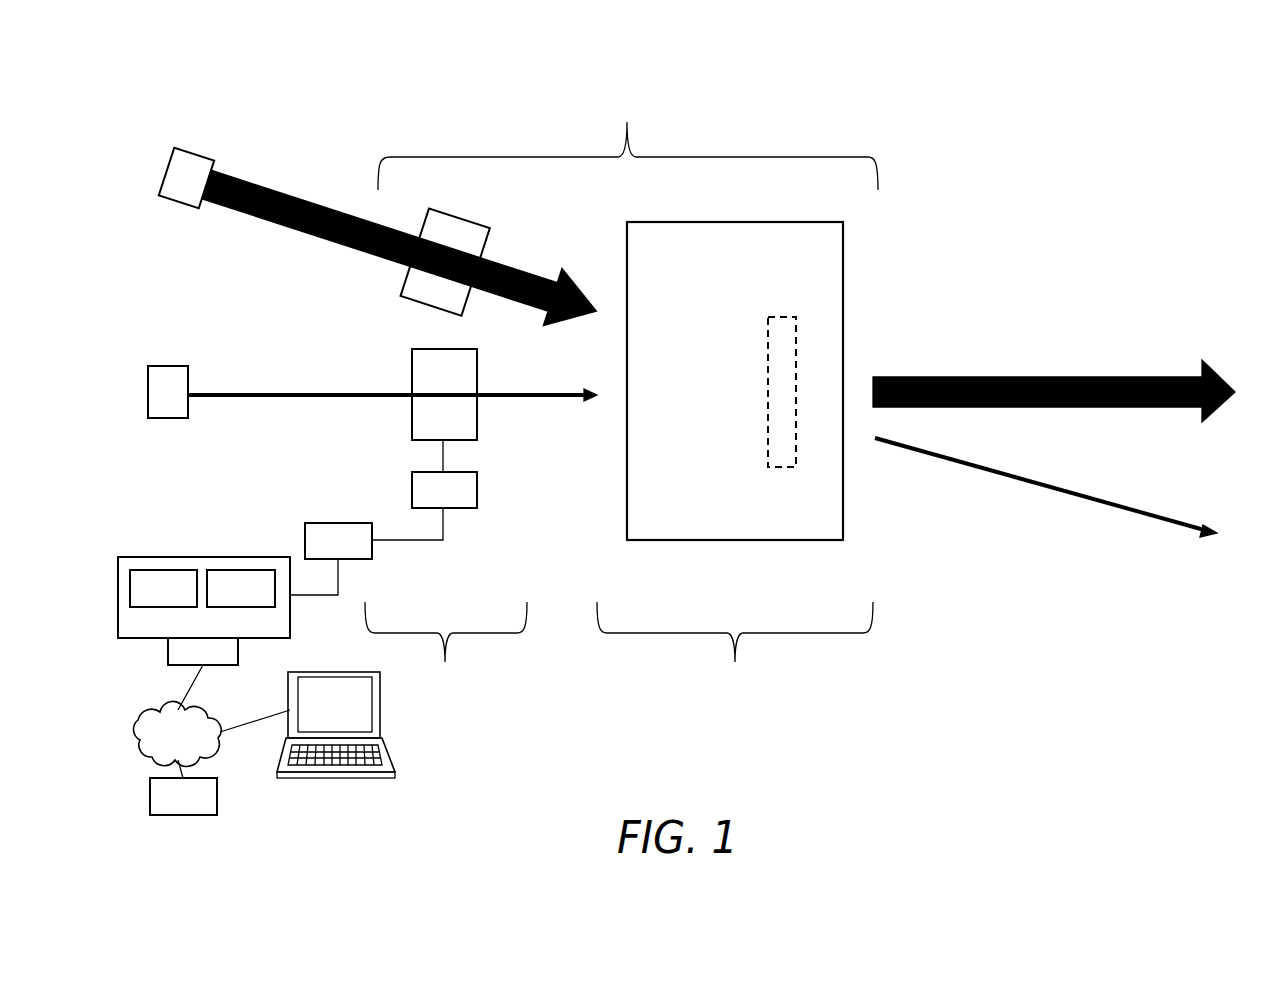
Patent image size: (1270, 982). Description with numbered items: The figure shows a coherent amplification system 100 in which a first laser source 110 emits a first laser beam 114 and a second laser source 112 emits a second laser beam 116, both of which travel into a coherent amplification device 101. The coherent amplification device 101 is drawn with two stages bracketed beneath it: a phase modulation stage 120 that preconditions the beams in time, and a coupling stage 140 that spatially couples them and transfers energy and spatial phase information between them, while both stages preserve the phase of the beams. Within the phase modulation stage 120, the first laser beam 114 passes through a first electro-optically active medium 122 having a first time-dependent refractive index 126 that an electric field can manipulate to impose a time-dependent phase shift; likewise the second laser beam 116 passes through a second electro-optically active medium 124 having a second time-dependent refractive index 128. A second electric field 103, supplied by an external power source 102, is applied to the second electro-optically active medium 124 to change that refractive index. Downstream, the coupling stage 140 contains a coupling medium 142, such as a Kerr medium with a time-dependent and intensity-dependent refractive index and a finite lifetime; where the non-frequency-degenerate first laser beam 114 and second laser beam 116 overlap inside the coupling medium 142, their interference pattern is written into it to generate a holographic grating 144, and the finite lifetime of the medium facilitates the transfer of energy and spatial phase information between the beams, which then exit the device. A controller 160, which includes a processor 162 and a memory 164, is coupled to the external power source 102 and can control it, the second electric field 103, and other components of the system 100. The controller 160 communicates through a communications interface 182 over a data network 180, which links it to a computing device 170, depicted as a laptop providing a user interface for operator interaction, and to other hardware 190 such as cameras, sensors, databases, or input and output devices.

The system 100 is at (1117, 125).
The coherent amplification device 101 is at (628, 144).
The external power source 102 is at (324, 551).
The second electric field 103 is at (430, 500).
The first laser source 110 is at (180, 147).
The second laser source 112 is at (160, 422).
The first laser beam 114 is at (282, 229).
The second laser beam 116 is at (258, 399).
The phase modulation stage 120 is at (446, 646).
The first electro-optically active medium 122 is at (402, 295).
The second electro-optically active medium 124 is at (412, 440).
The first time-dependent refractive index 126 is at (470, 235).
The second time-dependent refractive index 128 is at (458, 425).
The coupling stage 140 is at (735, 647).
The coupling medium 142 is at (627, 523).
The holographic grating 144 is at (793, 467).
The controller 160 is at (189, 630).
The processor 162 is at (149, 598).
The memory 164 is at (227, 598).
The computing device 170 is at (396, 775).
The data network 180 is at (162, 743).
The communications interface 182 is at (189, 662).
The other hardware 190 is at (169, 806).